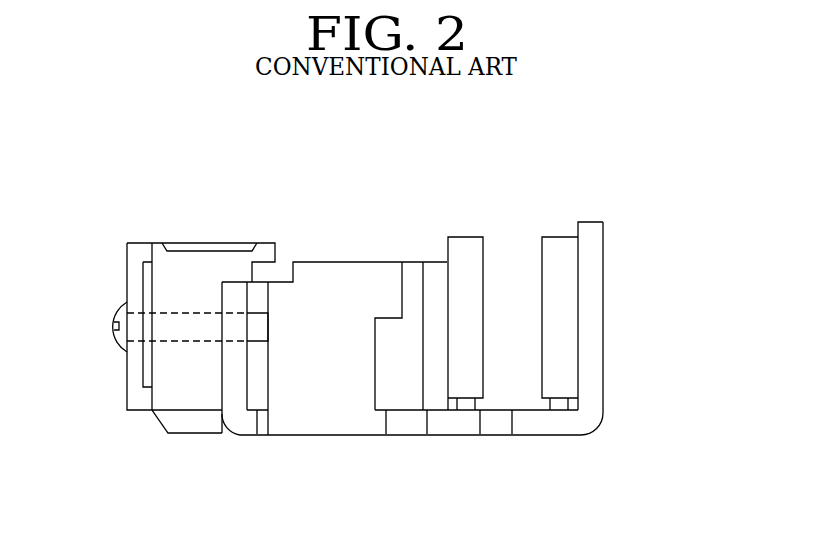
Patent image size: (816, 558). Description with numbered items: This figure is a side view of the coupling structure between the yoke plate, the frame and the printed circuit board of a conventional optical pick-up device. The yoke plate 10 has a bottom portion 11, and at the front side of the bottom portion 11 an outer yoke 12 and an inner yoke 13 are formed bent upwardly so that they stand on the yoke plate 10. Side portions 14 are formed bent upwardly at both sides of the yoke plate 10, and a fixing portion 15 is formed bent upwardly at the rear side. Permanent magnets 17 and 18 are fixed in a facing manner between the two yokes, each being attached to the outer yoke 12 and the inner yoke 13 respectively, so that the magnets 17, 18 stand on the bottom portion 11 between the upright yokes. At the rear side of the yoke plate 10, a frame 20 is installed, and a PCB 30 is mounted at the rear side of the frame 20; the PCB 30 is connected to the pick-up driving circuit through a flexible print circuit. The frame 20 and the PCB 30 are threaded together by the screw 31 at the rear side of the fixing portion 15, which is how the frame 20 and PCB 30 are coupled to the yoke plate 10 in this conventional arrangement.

The yoke plate 10 is at (462, 362).
The bottom portion 11 is at (440, 425).
The outer yoke 12 is at (595, 310).
The inner yoke 13 is at (433, 267).
The side portion 14 is at (325, 425).
The fixing portion 15 is at (235, 395).
The permanent magnet 17 is at (560, 243).
The permanent magnet 18 is at (467, 243).
The frame 20 is at (187, 257).
The printed circuit board 30 is at (130, 395).
The screw 31 is at (118, 315).